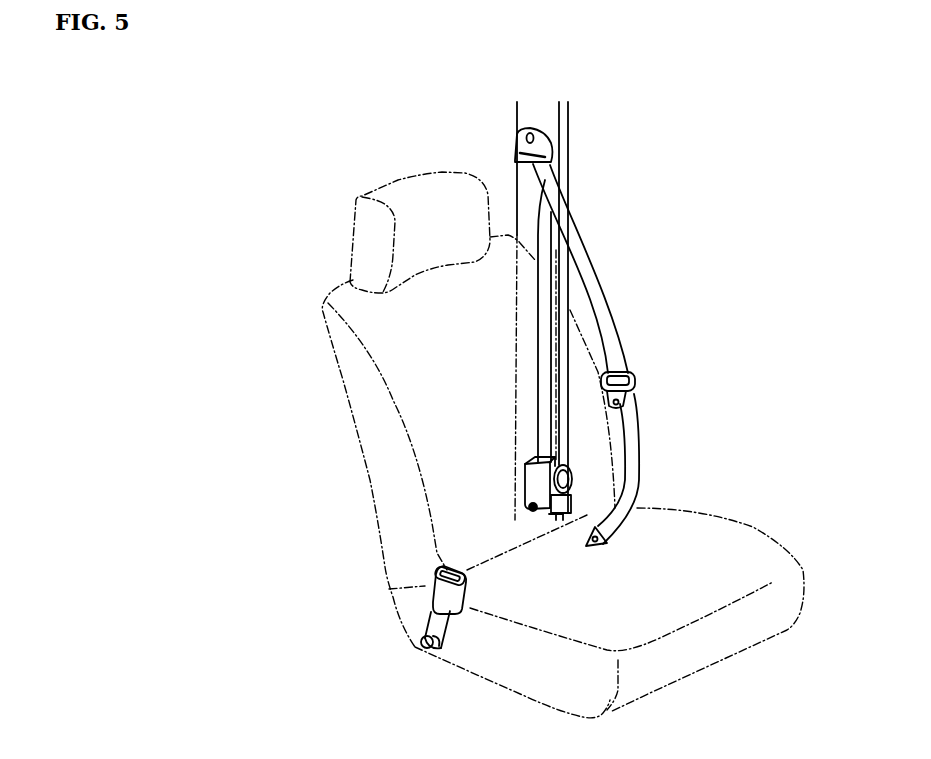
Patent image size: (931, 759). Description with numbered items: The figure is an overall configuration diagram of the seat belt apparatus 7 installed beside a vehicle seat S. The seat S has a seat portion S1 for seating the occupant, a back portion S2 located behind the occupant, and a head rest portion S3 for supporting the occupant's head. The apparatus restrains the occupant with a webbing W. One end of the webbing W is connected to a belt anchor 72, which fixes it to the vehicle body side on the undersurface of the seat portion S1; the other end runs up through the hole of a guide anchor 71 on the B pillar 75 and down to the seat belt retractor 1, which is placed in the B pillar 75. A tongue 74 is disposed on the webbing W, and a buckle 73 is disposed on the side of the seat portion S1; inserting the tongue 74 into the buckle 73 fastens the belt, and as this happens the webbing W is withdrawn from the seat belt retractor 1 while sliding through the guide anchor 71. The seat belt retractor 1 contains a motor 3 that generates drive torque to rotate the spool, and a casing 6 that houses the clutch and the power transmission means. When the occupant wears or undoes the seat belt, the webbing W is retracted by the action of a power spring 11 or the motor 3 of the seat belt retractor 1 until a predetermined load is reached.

The seat S is at (300, 265).
The seat portion S1 is at (736, 565).
The back portion S2 is at (449, 343).
The head rest portion S3 is at (451, 233).
The seat belt retractor 1 is at (533, 483).
The motor 3 is at (556, 518).
The casing 6 is at (572, 496).
The seat belt apparatus 7 is at (652, 358).
The power spring 11 is at (572, 472).
The guide anchor 71 is at (515, 138).
The belt anchor 72 is at (598, 543).
The buckle 73 is at (443, 592).
The tongue 74 is at (633, 388).
The B pillar 75 is at (568, 148).
The webbing W is at (600, 291).